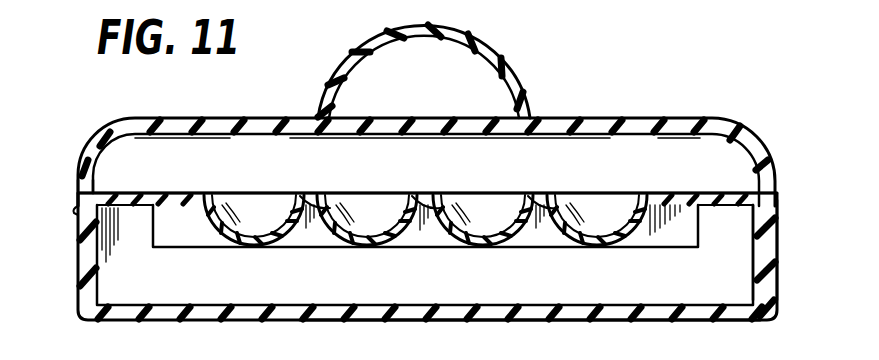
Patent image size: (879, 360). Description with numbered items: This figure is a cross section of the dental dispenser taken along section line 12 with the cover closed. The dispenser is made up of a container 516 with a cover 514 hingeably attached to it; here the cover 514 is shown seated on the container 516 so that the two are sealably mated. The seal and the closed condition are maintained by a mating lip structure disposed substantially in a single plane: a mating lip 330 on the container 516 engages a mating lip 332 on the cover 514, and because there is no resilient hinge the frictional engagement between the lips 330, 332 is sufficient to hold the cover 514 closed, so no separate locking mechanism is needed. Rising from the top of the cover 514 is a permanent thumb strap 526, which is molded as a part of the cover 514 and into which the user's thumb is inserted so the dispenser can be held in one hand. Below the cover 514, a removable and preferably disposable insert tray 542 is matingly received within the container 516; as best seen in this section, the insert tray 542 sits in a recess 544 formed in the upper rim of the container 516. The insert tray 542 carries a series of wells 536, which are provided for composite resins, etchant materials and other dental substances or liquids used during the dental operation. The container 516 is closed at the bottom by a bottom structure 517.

The section line 12 is at (425, 22).
The cover 514 is at (110, 127).
The thumb strap 526 is at (495, 62).
The mating lip 332 is at (69, 178).
The mating lip 330 is at (80, 213).
The container 516 is at (76, 298).
The bottom structure 517 is at (580, 325).
The recess 544 is at (798, 182).
The insert tray 542 is at (660, 187).
The wells 536 is at (458, 193).